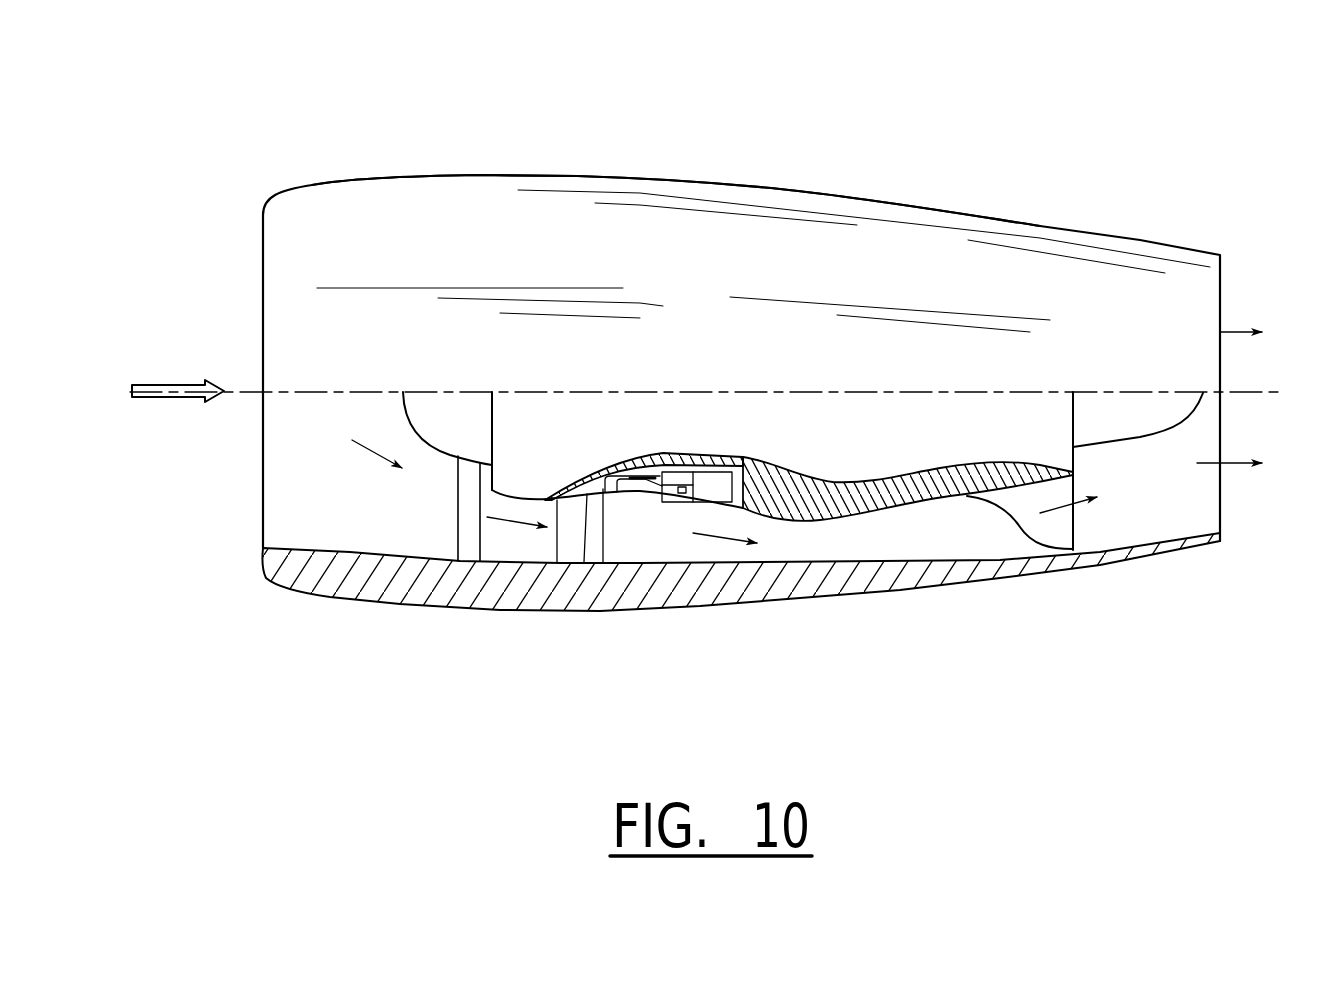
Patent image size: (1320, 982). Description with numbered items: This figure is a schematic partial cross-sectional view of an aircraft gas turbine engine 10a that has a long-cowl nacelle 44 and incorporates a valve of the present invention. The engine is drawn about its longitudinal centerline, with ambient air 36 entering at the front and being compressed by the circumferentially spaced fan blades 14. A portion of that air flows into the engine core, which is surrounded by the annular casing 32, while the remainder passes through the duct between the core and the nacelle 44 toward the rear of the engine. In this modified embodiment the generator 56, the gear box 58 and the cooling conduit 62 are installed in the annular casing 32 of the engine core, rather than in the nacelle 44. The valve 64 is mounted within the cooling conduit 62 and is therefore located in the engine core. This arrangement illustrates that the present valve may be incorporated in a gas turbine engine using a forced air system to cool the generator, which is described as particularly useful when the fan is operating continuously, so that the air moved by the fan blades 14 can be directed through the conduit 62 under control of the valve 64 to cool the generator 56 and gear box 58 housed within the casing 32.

The aircraft gas turbine engine 10a is at (740, 163).
The fan blades 14 is at (458, 531).
The annular casing 32 is at (940, 497).
The ambient air 36 is at (185, 384).
The nacelle 44 is at (578, 176).
The generator 56 is at (683, 495).
The gear box 58 is at (727, 505).
The cooling conduit 62 is at (618, 487).
The valve 64 is at (640, 491).